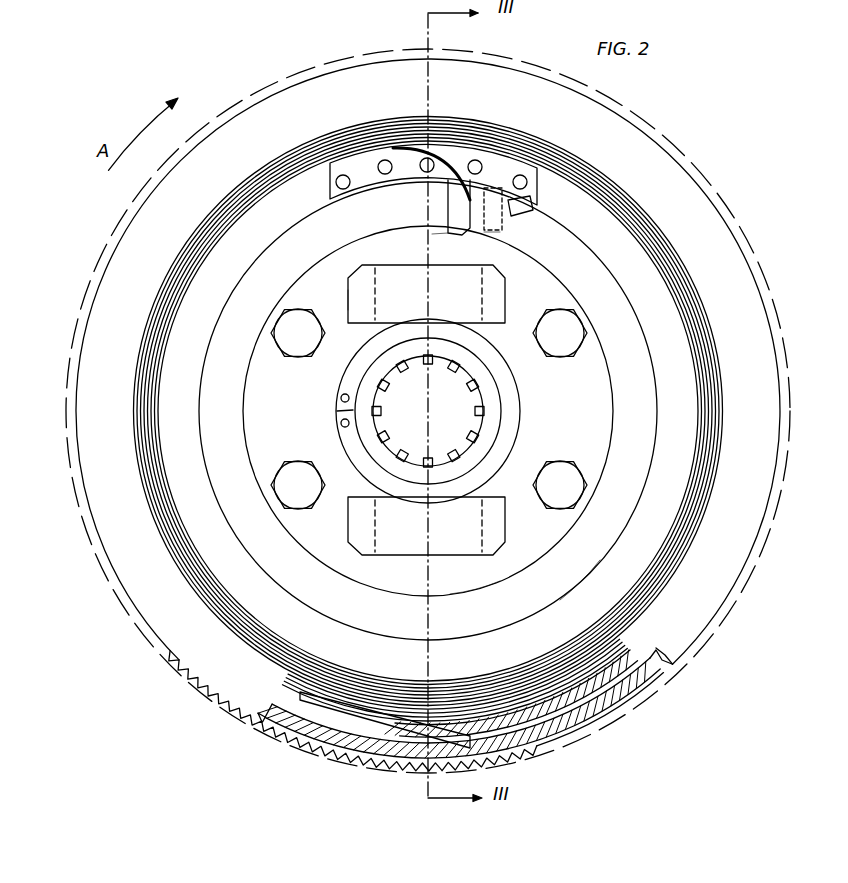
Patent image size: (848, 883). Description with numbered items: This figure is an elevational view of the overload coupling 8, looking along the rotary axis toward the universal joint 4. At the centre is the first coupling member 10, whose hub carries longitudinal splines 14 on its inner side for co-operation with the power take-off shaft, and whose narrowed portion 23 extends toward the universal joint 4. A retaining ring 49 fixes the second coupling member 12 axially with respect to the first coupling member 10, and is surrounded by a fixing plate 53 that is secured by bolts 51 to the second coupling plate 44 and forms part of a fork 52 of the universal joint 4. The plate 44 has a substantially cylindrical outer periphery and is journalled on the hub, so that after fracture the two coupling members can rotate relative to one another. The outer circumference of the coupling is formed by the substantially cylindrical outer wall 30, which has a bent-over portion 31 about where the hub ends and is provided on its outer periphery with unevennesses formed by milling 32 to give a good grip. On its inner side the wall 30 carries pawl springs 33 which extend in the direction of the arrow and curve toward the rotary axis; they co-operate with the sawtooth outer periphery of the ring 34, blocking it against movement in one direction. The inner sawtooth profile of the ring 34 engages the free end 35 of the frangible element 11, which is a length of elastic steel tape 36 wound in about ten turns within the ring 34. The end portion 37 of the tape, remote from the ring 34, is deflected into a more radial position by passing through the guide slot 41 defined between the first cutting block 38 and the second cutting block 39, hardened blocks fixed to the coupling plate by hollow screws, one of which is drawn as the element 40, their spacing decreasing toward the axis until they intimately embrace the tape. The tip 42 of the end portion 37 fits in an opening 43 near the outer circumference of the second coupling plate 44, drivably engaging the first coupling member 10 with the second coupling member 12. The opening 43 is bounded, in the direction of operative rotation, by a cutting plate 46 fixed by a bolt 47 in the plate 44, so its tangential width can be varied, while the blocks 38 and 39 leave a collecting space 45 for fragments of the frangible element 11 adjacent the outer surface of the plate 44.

The universal joint 4 is at (348, 298).
The overload coupling 8 is at (678, 128).
The first coupling member 10 is at (384, 462).
The frangible element 11 is at (375, 677).
The second coupling member 12 is at (284, 591).
The longitudinal splines 14 is at (477, 422).
The narrowed portion 23 is at (367, 437).
The outer wall 30 is at (653, 677).
The bent-over portion 31 is at (670, 200).
The milling 32 is at (278, 742).
The pawl spring 33 is at (372, 764).
The ring 34 is at (548, 735).
The free end 35 is at (428, 723).
The steel tape 36 is at (178, 304).
The end portion 37 is at (427, 178).
The first cutting block 38 is at (336, 185).
The second cutting block 39 is at (535, 190).
The pad hole 40 is at (380, 185).
The guide slot 41 is at (445, 190).
The tip 42 is at (468, 231).
The opening 43 is at (432, 234).
The second coupling plate 44 is at (598, 561).
The collecting space 45 is at (645, 513).
The cutting plate 46 is at (515, 225).
The bolt 47 is at (482, 248).
The retaining ring 49 is at (520, 412).
The bolts 51 is at (292, 357).
The fork 52 is at (370, 325).
The fixing plate 53 is at (488, 577).